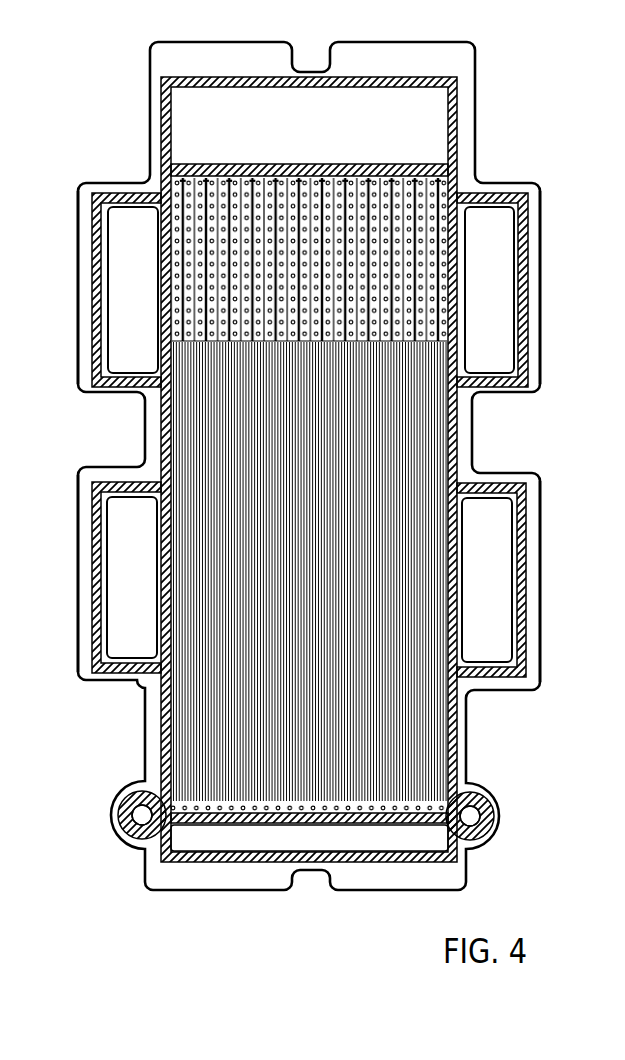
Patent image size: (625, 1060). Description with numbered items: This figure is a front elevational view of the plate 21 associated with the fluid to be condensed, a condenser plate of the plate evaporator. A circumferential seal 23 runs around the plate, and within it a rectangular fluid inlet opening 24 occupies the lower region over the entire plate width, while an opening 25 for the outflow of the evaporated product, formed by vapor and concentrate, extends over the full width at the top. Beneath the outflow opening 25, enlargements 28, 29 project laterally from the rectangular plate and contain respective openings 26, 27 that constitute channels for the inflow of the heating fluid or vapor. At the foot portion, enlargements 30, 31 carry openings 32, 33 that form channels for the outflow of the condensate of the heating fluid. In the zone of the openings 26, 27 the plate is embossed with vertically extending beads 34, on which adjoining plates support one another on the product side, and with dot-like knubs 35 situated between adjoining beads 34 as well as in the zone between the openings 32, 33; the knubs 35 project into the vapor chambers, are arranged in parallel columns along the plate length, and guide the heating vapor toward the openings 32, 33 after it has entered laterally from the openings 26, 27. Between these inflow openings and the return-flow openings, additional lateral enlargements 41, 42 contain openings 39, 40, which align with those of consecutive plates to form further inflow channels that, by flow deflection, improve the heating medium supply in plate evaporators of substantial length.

The plate 21 is at (491, 101).
The circumferential seal 23 is at (163, 126).
The fluid inlet opening 24 is at (250, 842).
The opening for outflow of evaporated product 25 is at (250, 95).
The opening 26 is at (122, 243).
The opening 27 is at (498, 232).
The enlargement 28 is at (82, 280).
The enlargement 29 is at (540, 302).
The enlargement 30 is at (118, 790).
The enlargement 31 is at (497, 806).
The opening 32 is at (140, 820).
The opening 33 is at (470, 821).
The embossed beads 34 is at (437, 309).
The knubs 35 is at (177, 295).
The opening 39 is at (115, 622).
The opening 40 is at (498, 573).
The lateral enlargement 41 is at (78, 638).
The lateral enlargement 42 is at (540, 643).